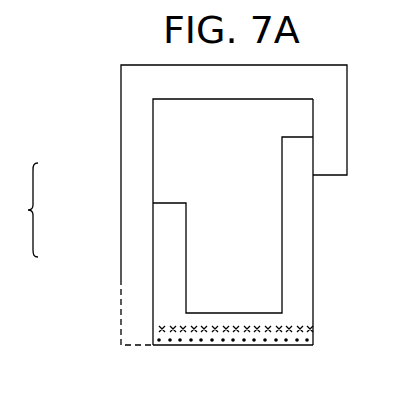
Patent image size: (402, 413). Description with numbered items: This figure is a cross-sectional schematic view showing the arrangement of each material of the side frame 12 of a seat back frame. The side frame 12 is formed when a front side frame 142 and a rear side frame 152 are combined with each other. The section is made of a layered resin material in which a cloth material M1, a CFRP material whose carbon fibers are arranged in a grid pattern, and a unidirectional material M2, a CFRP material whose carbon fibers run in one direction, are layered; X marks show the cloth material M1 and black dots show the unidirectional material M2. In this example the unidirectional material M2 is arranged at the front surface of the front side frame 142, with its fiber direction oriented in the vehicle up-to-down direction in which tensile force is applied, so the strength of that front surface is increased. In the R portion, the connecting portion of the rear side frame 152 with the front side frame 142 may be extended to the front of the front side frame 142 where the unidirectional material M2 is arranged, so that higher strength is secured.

The rear side frame 152 is at (132, 167).
The front side frame 142 is at (168, 264).
The side frame 12 is at (21, 210).
The R portion R is at (140, 303).
The cloth material M1 is at (314, 326).
The unidirectional material M2 is at (300, 343).